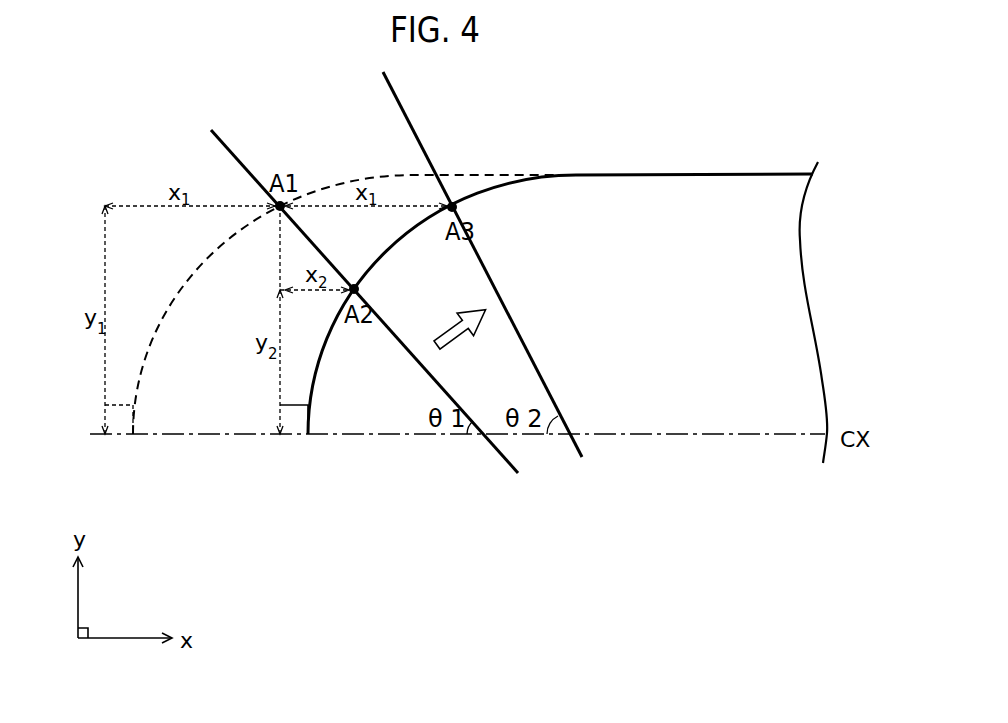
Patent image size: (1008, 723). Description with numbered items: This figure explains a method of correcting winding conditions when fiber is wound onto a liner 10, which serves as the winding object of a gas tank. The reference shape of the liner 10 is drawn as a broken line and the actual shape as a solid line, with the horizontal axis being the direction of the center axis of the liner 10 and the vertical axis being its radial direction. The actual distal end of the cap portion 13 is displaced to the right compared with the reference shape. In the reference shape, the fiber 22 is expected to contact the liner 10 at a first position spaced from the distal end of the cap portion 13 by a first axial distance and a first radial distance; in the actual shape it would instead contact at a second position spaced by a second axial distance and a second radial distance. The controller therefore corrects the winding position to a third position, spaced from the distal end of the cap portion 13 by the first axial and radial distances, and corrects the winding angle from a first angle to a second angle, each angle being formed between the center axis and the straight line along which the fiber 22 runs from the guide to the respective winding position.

The liner 10 is at (222, 243).
The cap portion 13 is at (122, 427).
The fiber 22 is at (237, 152).